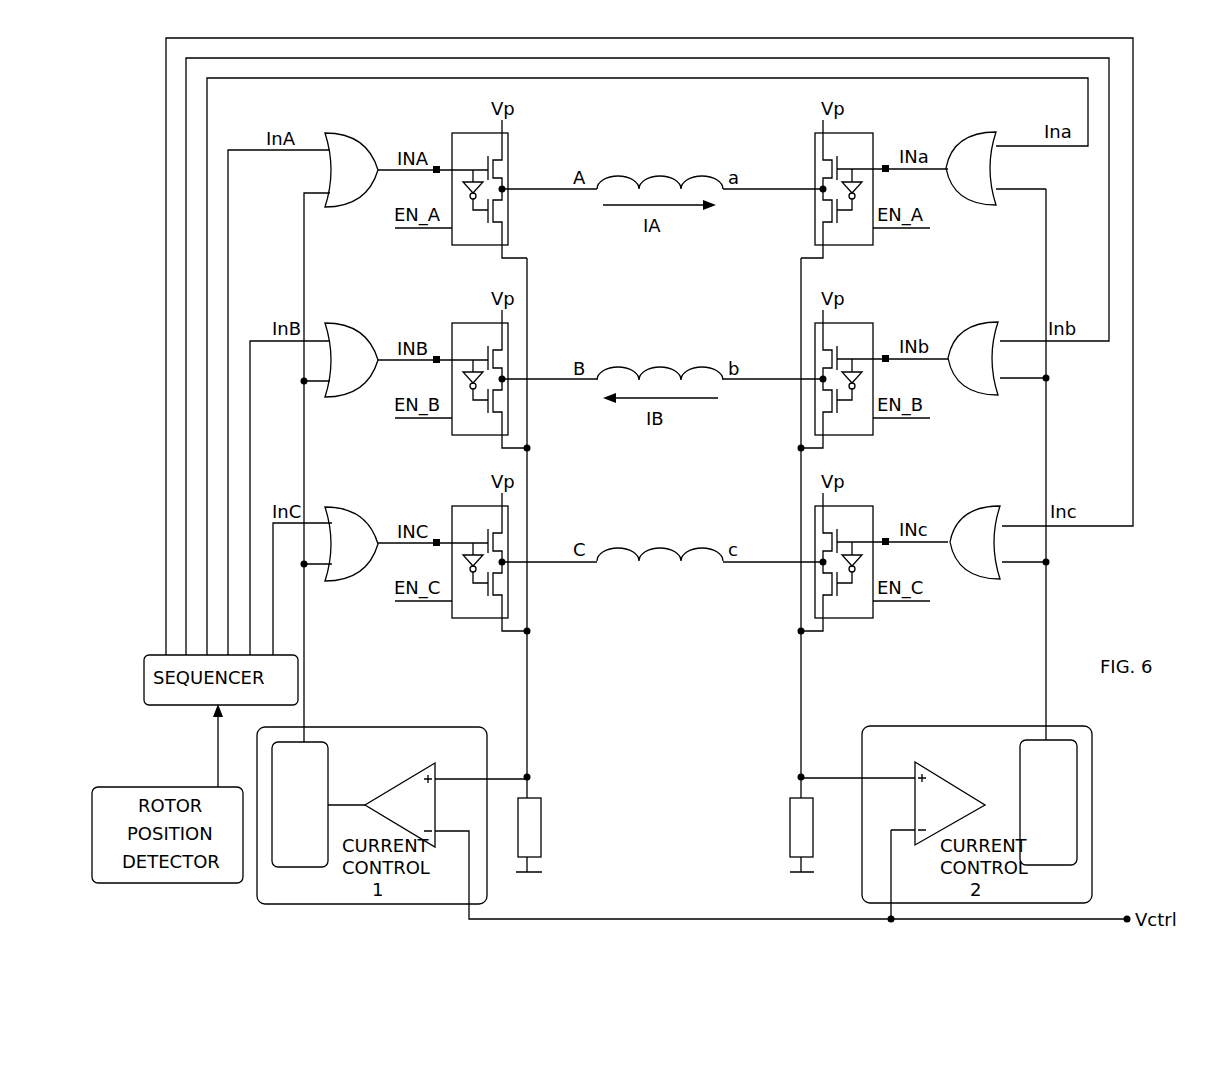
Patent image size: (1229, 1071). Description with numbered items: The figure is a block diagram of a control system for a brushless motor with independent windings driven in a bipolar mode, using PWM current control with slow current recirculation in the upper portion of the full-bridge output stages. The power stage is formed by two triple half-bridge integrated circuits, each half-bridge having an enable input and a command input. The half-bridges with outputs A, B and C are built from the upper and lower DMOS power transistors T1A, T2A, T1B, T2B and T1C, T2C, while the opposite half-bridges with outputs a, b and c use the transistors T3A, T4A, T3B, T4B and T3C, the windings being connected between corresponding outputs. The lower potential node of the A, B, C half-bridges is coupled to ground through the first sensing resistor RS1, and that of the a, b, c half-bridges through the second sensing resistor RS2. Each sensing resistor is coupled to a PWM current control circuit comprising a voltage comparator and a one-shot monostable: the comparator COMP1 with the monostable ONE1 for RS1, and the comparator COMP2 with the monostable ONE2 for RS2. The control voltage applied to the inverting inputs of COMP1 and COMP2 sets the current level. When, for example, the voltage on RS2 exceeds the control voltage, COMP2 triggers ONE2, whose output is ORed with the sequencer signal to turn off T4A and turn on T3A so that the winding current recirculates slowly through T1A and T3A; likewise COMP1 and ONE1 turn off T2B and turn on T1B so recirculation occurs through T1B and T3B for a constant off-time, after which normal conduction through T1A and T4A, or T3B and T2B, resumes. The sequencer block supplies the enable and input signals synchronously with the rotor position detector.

The MOS transistor T1A is at (487, 189).
The MOS transistor T2A is at (519, 218).
The MOS transistor T1B is at (487, 379).
The MOS transistor T2B is at (519, 408).
The MOS transistor T1C is at (487, 562).
The MOS transistor T2C is at (497, 583).
The MOS transistor T3A is at (835, 189).
The MOS transistor T4A is at (808, 218).
The MOS transistor T3B is at (835, 379).
The MOS transistor T4B is at (808, 408).
The MOS transistor T3C is at (835, 562).
The monostable circuit ONE1 is at (300, 804).
The monostable circuit ONE2 is at (1048, 802).
The voltage comparator COMP1 is at (394, 803).
The voltage comparator COMP2 is at (965, 802).
The first sensing resistor RS1 is at (551, 823).
The second sensing resistor RS2 is at (785, 823).